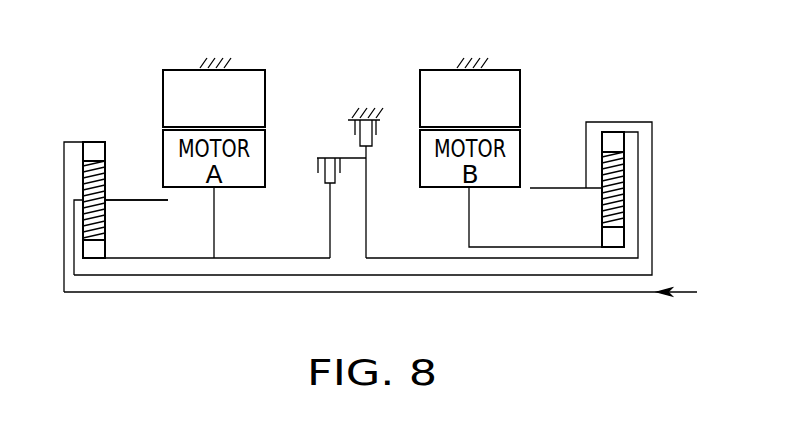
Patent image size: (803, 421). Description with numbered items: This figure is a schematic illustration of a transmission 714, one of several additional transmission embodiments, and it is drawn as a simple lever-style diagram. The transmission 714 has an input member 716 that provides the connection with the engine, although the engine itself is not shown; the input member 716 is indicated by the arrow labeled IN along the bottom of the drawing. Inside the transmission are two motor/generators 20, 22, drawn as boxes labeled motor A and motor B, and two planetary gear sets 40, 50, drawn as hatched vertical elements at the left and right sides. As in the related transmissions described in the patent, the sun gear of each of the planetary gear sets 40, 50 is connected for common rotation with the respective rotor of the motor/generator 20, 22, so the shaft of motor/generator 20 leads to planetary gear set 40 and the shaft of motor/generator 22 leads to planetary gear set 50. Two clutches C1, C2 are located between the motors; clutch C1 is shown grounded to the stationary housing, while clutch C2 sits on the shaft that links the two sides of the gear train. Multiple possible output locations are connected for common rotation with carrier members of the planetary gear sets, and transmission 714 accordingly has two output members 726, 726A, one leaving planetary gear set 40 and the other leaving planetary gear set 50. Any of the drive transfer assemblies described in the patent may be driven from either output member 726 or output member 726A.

The transmission 714 is at (603, 83).
The input member 716 is at (583, 292).
The planetary gear set 40 is at (121, 238).
The planetary gear set 50 is at (582, 233).
The output member 726 is at (147, 200).
The output member 726A is at (558, 188).
The motor/generator 20 is at (224, 202).
The motor/generator 22 is at (478, 201).
The clutch C1 is at (387, 129).
The clutch C2 is at (311, 169).